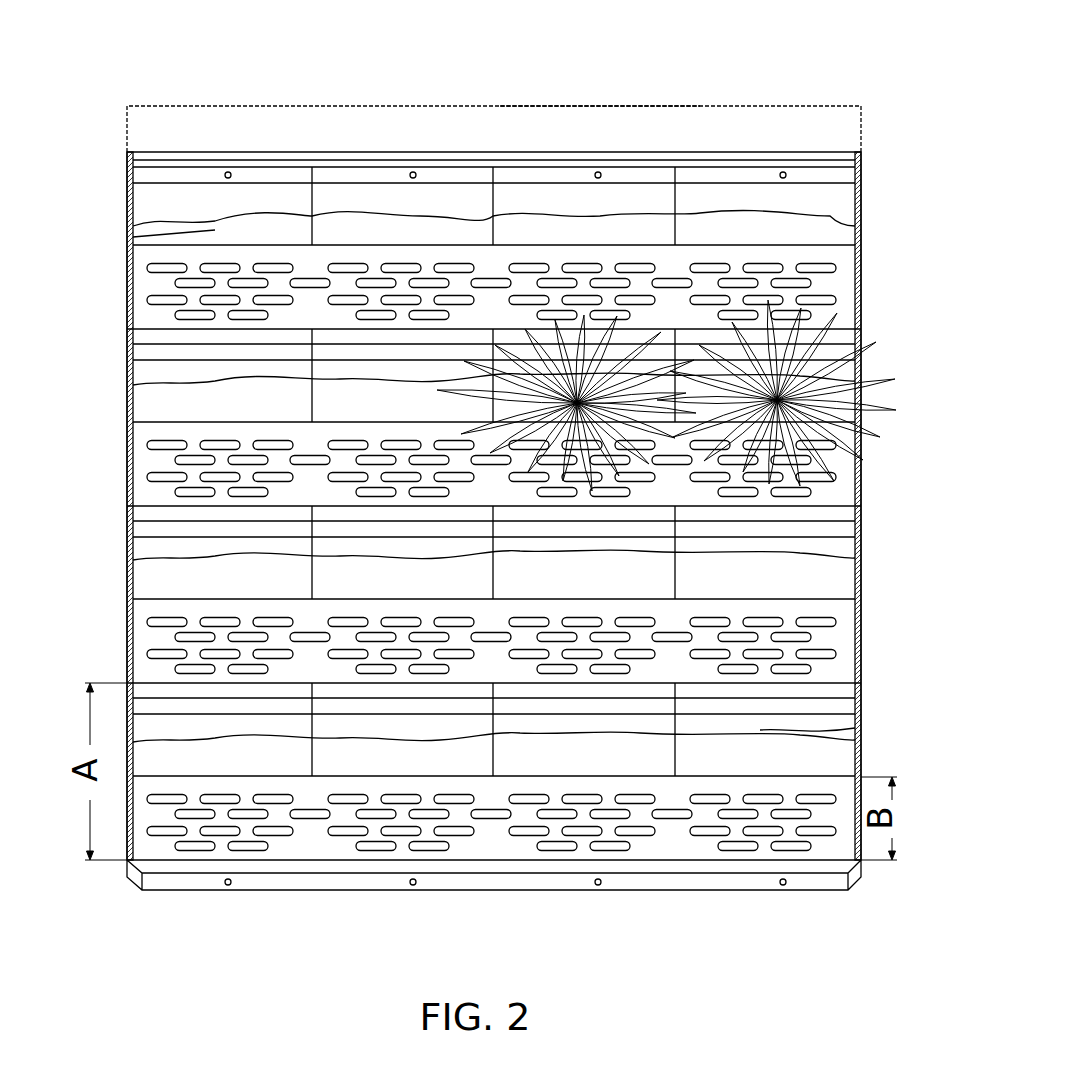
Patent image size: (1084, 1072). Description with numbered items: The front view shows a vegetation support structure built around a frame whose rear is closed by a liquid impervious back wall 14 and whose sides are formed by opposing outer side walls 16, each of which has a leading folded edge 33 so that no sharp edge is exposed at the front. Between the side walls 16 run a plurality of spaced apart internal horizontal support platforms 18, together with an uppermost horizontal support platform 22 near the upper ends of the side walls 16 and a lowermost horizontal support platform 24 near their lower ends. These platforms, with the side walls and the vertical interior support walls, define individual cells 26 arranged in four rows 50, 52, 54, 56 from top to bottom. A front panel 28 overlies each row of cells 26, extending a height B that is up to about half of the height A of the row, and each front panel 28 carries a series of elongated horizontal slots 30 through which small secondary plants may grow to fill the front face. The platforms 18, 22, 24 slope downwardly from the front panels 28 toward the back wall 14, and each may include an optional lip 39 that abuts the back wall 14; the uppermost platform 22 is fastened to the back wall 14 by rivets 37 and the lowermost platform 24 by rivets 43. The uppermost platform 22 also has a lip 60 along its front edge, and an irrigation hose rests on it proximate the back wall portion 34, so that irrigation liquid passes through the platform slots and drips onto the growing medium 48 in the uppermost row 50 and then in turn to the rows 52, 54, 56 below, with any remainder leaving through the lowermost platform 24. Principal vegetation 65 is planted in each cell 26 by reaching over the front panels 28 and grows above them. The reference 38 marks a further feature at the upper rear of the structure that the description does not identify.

The back wall 14 is at (494, 506).
The outer side walls 16 is at (489, 506).
The internal horizontal support platforms 18 is at (453, 365).
The uppermost horizontal support platform 22 is at (455, 196).
The lowermost horizontal support platform 24 is at (494, 897).
The cells 26 is at (833, 648).
The front panels 28 is at (448, 469).
The elongated horizontal slots 30 is at (491, 352).
The folded edge 33 is at (441, 646).
The back wall portion 34 is at (494, 94).
The rivets 37 is at (505, 107).
The flange edge 38 is at (600, 71).
The lip 39 is at (452, 641).
The rivets 43 is at (505, 906).
The growing medium 48 is at (450, 413).
The uppermost row of cells 50 is at (547, 241).
The second row of cells 52 is at (913, 418).
The third row of cells 54 is at (912, 594).
The lowermost row of cells 56 is at (547, 771).
The lip 60 is at (453, 132).
The vegetation 65 is at (674, 395).